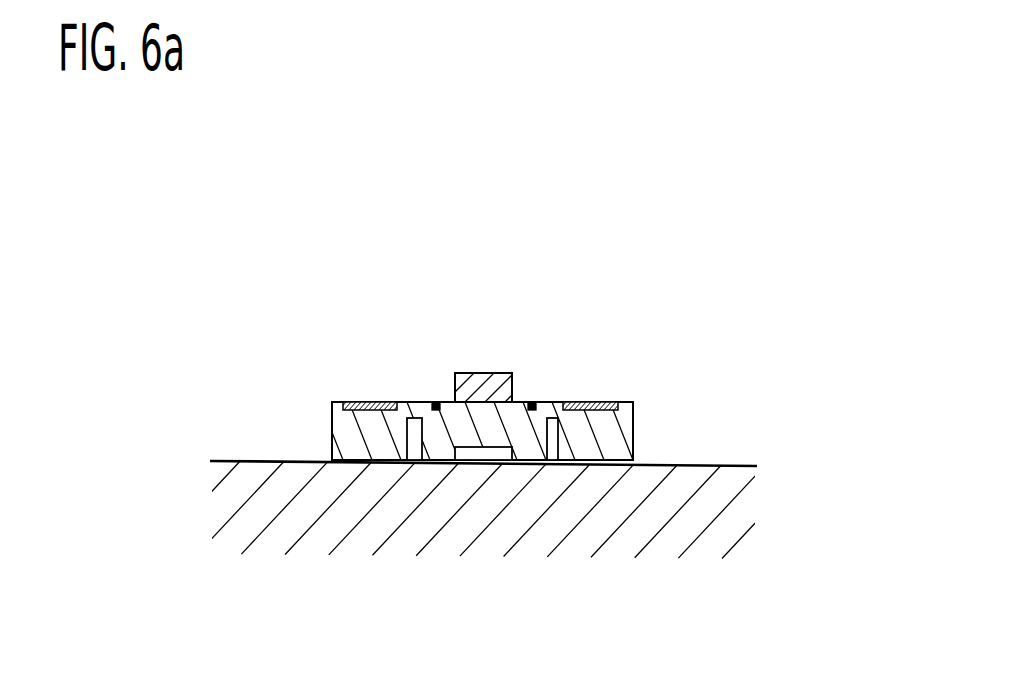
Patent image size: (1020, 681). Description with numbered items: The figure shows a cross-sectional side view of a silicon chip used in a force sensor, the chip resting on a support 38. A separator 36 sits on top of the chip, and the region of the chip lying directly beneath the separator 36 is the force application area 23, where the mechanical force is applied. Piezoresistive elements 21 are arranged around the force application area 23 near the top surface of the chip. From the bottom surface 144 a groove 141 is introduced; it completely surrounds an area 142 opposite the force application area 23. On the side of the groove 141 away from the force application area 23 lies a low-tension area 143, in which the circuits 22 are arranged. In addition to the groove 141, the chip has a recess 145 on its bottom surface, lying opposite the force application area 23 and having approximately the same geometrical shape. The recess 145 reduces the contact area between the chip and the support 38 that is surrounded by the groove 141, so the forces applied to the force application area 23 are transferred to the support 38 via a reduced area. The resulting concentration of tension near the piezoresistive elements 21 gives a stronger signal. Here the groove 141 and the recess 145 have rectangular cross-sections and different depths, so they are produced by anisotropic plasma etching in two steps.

The piezoresistive elements 21 is at (436, 401).
The circuits 22 is at (610, 402).
The force application area 23 is at (494, 396).
The separator 36 is at (471, 386).
The support 38 is at (511, 510).
The groove 141 is at (412, 464).
The area opposite the force application area 142 is at (437, 480).
The low-tension area 143 is at (598, 392).
The bottom surface 144 is at (612, 482).
The recess 145 is at (483, 454).